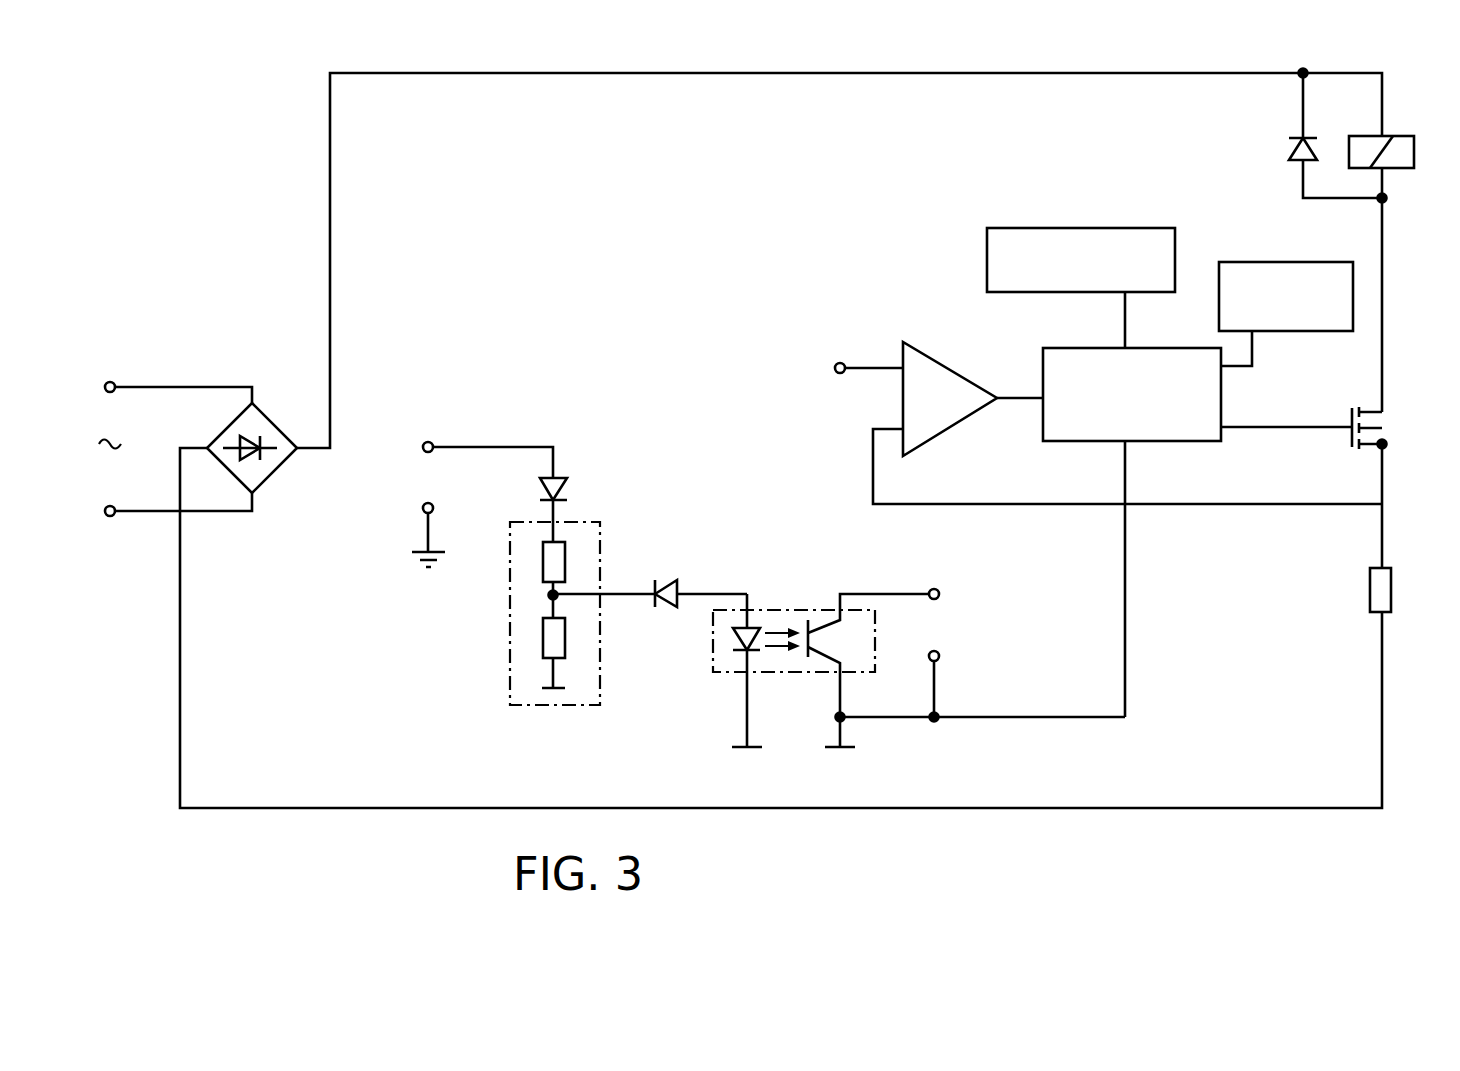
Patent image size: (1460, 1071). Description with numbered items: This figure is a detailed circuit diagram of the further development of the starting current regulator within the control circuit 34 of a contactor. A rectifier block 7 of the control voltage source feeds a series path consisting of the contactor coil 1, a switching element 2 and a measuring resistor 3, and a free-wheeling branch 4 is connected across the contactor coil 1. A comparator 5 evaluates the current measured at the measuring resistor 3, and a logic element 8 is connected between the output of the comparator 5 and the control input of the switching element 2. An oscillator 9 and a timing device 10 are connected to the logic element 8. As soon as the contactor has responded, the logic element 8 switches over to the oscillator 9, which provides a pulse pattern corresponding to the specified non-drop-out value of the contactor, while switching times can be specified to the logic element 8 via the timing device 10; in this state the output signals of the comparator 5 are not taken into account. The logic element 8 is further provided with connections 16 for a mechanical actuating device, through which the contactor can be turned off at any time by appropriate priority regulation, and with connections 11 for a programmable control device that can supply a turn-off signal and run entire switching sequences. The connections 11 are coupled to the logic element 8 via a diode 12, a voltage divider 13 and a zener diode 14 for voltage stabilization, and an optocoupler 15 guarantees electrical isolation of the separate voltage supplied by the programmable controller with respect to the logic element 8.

The contactor coil 1 is at (1395, 136).
The switching element 2 is at (1375, 420).
The measuring resistor 3 is at (1391, 590).
The free-wheeling branch 4 is at (1303, 182).
The comparator 5 is at (937, 360).
The rectifier block 7 is at (270, 473).
The logic element 8 is at (1093, 348).
The oscillator 9 is at (1130, 228).
The timing device 10 is at (1283, 331).
The connections for the programmable control device 11 is at (428, 441).
The diode 12 is at (570, 490).
The voltage divider 13 is at (600, 693).
The zener diode 14 is at (672, 583).
The optocoupler 15 is at (770, 610).
The connections for the mechanical actuating device 16 is at (936, 588).
The control circuit 34 is at (857, 73).